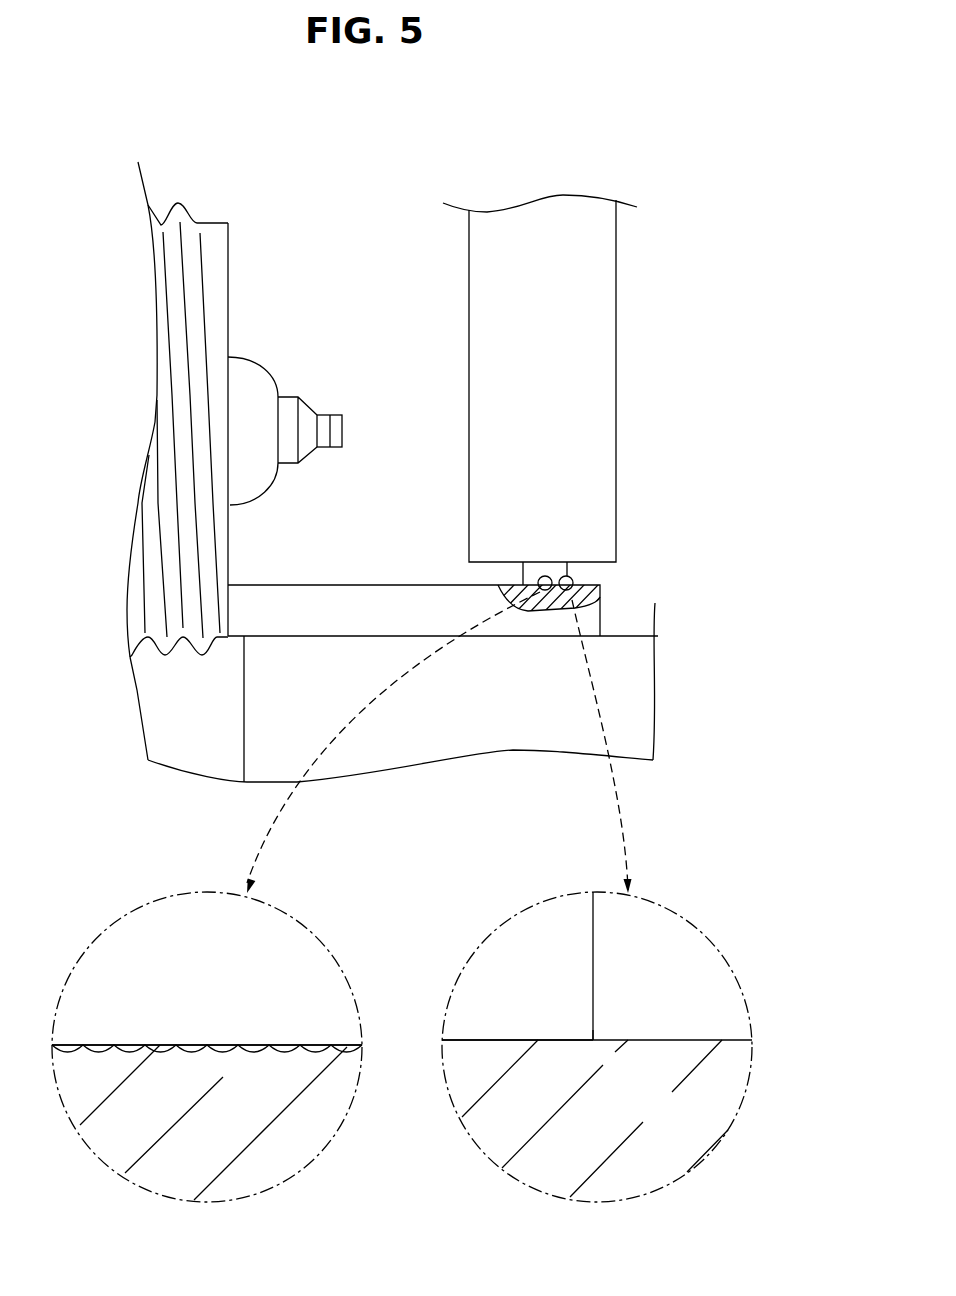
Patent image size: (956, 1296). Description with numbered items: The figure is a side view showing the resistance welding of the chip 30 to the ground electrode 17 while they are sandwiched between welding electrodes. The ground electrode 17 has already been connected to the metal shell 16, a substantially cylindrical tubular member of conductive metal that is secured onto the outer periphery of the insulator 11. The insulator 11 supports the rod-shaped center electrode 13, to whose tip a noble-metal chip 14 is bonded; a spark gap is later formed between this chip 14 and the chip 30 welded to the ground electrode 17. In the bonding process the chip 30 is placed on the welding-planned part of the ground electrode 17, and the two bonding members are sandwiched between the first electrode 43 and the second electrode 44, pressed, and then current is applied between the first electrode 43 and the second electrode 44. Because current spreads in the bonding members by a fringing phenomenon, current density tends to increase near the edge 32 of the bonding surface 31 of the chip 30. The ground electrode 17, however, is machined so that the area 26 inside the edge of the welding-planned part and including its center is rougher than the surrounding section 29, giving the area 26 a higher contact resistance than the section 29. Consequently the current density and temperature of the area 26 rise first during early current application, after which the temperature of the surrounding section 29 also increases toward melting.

The insulator 11 is at (250, 383).
The center electrode 13 is at (308, 413).
The chip 14 is at (337, 427).
The metal shell 16 is at (210, 252).
The ground electrode 17 is at (358, 600).
The area 26 is at (193, 1045).
The section 29 is at (508, 1040).
The chip 30 is at (558, 570).
The bonding surface 31 is at (237, 1053).
The edge 32 is at (593, 1040).
The first electrode 43 is at (410, 757).
The second electrode 44 is at (595, 370).